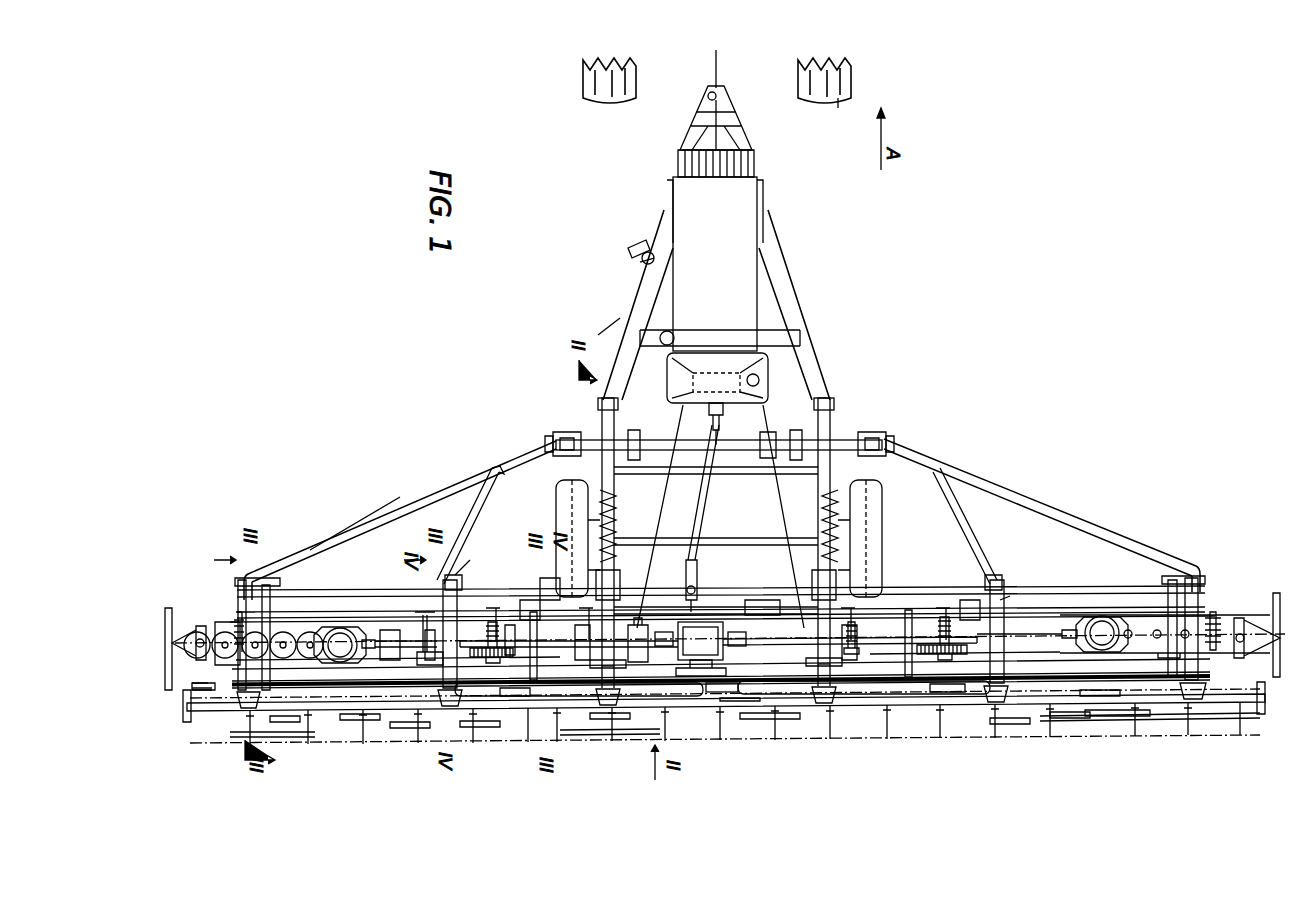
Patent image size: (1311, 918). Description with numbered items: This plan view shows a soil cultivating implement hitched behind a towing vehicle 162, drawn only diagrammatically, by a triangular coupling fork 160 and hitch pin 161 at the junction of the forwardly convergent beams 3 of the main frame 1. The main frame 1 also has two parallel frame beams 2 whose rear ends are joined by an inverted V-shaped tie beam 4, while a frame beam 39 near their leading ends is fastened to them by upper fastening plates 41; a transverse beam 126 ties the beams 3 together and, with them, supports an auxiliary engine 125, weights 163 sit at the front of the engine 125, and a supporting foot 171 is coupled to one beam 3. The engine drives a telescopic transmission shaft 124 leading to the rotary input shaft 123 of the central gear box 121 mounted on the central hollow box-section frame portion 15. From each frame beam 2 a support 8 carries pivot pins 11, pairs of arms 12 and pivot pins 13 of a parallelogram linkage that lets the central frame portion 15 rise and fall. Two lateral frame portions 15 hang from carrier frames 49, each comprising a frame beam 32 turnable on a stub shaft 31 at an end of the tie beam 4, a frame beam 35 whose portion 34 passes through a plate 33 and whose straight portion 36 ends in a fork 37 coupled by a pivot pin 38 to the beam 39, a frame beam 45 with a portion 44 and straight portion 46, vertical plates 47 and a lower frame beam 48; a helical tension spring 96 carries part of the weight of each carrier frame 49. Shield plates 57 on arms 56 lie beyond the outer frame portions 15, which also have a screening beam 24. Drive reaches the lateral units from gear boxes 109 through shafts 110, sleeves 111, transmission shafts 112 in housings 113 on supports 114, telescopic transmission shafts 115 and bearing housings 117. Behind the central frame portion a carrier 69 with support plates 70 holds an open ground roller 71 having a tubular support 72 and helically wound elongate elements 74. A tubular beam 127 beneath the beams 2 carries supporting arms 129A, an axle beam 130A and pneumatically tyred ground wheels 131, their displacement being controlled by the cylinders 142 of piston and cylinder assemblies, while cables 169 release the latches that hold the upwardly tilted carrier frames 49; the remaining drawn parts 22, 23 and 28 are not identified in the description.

The main frame 1 is at (745, 498).
The frame beams 2 is at (626, 512).
The beams 3 is at (782, 272).
The tie beam 4 is at (745, 708).
The support 8 is at (842, 588).
The pivot pins 11 is at (236, 620).
The arms 12 is at (552, 578).
The pivot pins 13 is at (945, 694).
The hollow box-section frame portion 15 is at (1268, 703).
The tine bar 22 is at (1066, 718).
The tine bar 23 is at (478, 724).
The screening beam 24 is at (600, 718).
The roller 28 is at (782, 694).
The stub shaft 31 is at (900, 684).
The frame beam 32 is at (1094, 698).
The plate 33 is at (1208, 700).
The portion 34 is at (225, 675).
The frame beam 35 is at (1138, 546).
The straight portion 36 is at (1064, 497).
The fork 37 is at (890, 448).
The pivot pins 38 is at (870, 434).
The frame beam 39 is at (786, 444).
The upper fastening plates 41 is at (637, 440).
The portion 44 is at (1008, 592).
The frame beam 45 is at (953, 538).
The straight portion 46 is at (980, 540).
The plates 47 is at (1000, 547).
The frame beams 48 is at (1175, 598).
The carrier frame 49 is at (1010, 585).
The arms 56 is at (1270, 645).
The shield plates 57 is at (1268, 600).
The carrier 69 is at (1160, 700).
The support plates 70 is at (1258, 708).
The ground roller 71 is at (1148, 706).
The tubular support 72 is at (300, 718).
The elongate elements 74 is at (1002, 722).
The helical tension spring 96 is at (935, 628).
The gear box 109 is at (1102, 620).
The shaft 110 is at (372, 664).
The sleeve 111 is at (1060, 600).
The transmission shaft 112 is at (352, 627).
The housing 113 is at (395, 576).
The support 114 is at (1056, 703).
The telescopic transmission shafts 115 is at (952, 600).
The bearing housings 117 is at (650, 636).
The central gear box 121 is at (722, 630).
The rotary input shaft 123 is at (698, 622).
The telescopic transmission shaft 124 is at (716, 530).
The auxiliary engine 125 is at (757, 205).
The transverse beam 126 is at (805, 342).
The tubular beam 127 is at (718, 440).
The supporting arms 129A is at (876, 524).
The axle beam 130A is at (752, 608).
The ground wheels 131 is at (884, 516).
The cylinder 142 is at (830, 436).
The coupling fork 160 is at (698, 118).
The hitch pin 161 is at (706, 90).
The towing vehicle 162 is at (828, 108).
The weights 163 is at (745, 160).
The cables 169 is at (776, 522).
The supporting foot 171 is at (635, 262).